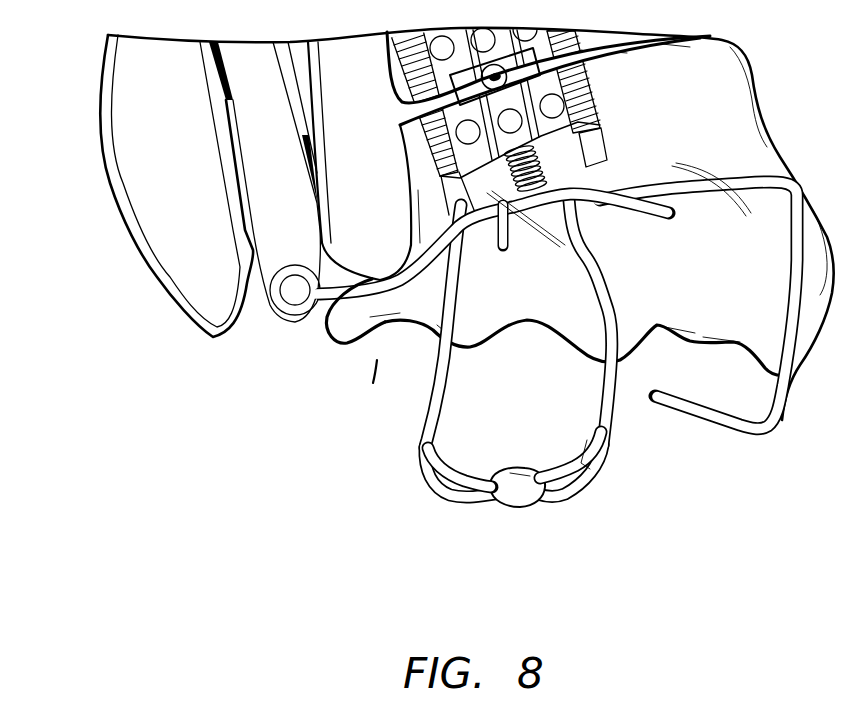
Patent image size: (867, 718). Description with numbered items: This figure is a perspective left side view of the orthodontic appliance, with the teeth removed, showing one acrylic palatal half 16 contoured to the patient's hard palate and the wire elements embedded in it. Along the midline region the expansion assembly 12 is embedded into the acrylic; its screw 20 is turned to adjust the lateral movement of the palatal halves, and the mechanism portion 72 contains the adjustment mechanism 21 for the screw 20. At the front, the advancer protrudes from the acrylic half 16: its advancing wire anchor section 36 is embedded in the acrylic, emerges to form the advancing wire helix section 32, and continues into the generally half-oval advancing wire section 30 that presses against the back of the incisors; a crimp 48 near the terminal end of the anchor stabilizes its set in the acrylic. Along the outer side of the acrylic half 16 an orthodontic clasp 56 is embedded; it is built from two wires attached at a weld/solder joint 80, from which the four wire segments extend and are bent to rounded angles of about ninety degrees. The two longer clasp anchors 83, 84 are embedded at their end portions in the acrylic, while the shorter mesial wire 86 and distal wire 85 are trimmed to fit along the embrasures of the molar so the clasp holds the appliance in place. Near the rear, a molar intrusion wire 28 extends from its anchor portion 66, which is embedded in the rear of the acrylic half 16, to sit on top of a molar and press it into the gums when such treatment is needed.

The expansion assembly 12 is at (509, 116).
The acrylic palatal half 16 is at (737, 102).
The screw 20 is at (543, 166).
The adjustment mechanism 21 is at (403, 123).
The molar intrusion wire 28 is at (702, 416).
The advancing wire section 30 is at (97, 107).
The advancing wire helix section 32 is at (293, 318).
The advancing wire anchor section 36 is at (397, 290).
The crimp 48 is at (640, 213).
The orthodontic clasp 56 is at (498, 402).
The anchor portion 66 is at (740, 183).
The mechanism portion 72 is at (597, 95).
The joint 80 is at (517, 492).
The clasp anchor 83 is at (438, 387).
The clasp anchor 84 is at (597, 385).
The distal wire 85 is at (575, 502).
The mesial wire 86 is at (422, 477).